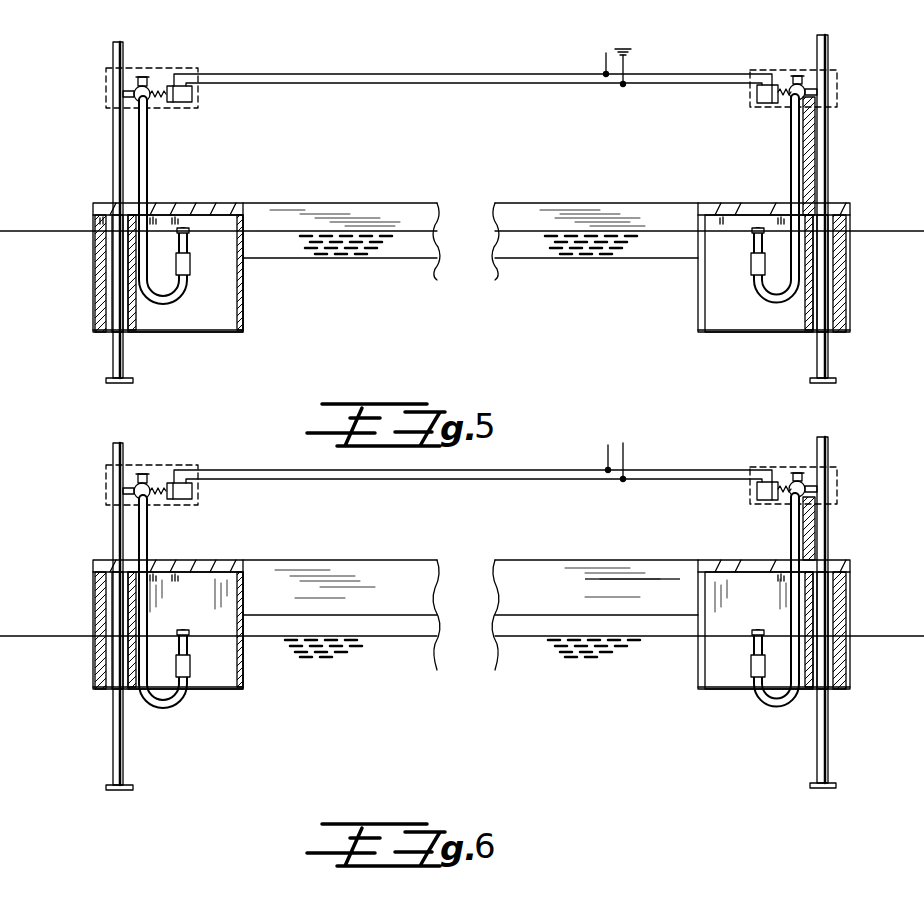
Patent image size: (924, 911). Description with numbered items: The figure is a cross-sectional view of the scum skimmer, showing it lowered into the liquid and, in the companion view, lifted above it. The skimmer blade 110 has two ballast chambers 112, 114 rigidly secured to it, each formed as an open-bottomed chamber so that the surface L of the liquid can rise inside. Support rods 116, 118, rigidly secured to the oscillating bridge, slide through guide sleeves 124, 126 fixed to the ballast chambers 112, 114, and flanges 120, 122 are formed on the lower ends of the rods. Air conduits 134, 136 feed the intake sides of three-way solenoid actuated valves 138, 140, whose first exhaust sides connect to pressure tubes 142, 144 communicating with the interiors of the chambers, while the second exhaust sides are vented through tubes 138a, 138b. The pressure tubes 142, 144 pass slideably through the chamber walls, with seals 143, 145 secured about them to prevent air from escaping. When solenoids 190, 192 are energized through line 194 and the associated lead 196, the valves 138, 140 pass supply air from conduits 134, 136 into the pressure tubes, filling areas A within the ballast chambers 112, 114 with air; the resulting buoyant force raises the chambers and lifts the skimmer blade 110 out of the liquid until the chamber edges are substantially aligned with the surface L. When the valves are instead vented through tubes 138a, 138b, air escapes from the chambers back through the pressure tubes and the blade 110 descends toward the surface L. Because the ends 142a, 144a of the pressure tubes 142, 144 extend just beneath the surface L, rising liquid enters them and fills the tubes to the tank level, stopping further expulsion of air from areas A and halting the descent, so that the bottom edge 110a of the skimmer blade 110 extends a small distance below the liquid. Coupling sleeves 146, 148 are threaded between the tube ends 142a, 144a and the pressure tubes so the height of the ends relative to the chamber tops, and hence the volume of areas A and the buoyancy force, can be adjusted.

In FIG. 5, the skimmer blade 110 is at (410, 218).
In FIG. 6, the skimmer blade 110 is at (528, 583).
In FIG. 5, the bottom edge of skimmer blade 110a is at (385, 259).
In FIG. 6, the bottom edge of skimmer blade 110a is at (535, 615).
In FIG. 5, the ballast chamber 112 is at (243, 295).
In FIG. 6, the ballast chamber 112 is at (204, 629).
In FIG. 5, the ballast chamber 114 is at (703, 296).
In FIG. 6, the ballast chamber 114 is at (740, 631).
In FIG. 5, the support rod 116 is at (113, 141).
In FIG. 6, the support rod 116 is at (113, 527).
In FIG. 5, the support rod 118 is at (828, 146).
In FIG. 6, the support rod 118 is at (828, 452).
In FIG. 5, the flange 120 is at (126, 384).
In FIG. 6, the flange 120 is at (126, 791).
In FIG. 5, the flange 122 is at (830, 384).
In FIG. 6, the flange 122 is at (830, 789).
In FIG. 5, the guide sleeve 124 is at (117, 251).
In FIG. 6, the guide sleeve 124 is at (71, 630).
In FIG. 5, the guide sleeve 126 is at (826, 243).
In FIG. 6, the guide sleeve 126 is at (865, 630).
In FIG. 5, the air conduit 134 is at (133, 91).
In FIG. 6, the air conduit 134 is at (112, 456).
In FIG. 5, the air conduit 136 is at (813, 80).
In FIG. 6, the air conduit 136 is at (848, 472).
In FIG. 5, the three-way solenoid actuated valve 138 is at (150, 83).
In FIG. 6, the three-way solenoid actuated valve 138 is at (162, 462).
In FIG. 5, the vent tube 138a is at (146, 78).
In FIG. 6, the vent tube 138a is at (189, 460).
In FIG. 5, the vent tube 138b is at (791, 83).
In FIG. 6, the vent tube 138b is at (771, 448).
In FIG. 5, the three-way solenoid actuated valve 140 is at (797, 76).
In FIG. 6, the three-way solenoid actuated valve 140 is at (814, 446).
In FIG. 5, the pressure tube 142 is at (147, 138).
In FIG. 6, the pressure tube 142 is at (172, 601).
In FIG. 5, the end of pressure tube 142a is at (190, 240).
In FIG. 6, the end of pressure tube 142a is at (240, 651).
In FIG. 5, the seal 143 is at (176, 203).
In FIG. 6, the seal 143 is at (211, 558).
In FIG. 5, the pressure tube 144 is at (801, 165).
In FIG. 6, the pressure tube 144 is at (825, 600).
In FIG. 5, the end of pressure tube 144a is at (755, 243).
In FIG. 6, the end of pressure tube 144a is at (700, 654).
In FIG. 5, the seal 145 is at (790, 215).
In FIG. 6, the seal 145 is at (764, 593).
In FIG. 5, the coupling sleeve 146 is at (190, 268).
In FIG. 6, the coupling sleeve 146 is at (221, 688).
In FIG. 5, the coupling sleeve 148 is at (754, 268).
In FIG. 6, the coupling sleeve 148 is at (732, 688).
In FIG. 5, the solenoid 190 is at (182, 104).
In FIG. 6, the solenoid 190 is at (200, 497).
In FIG. 5, the solenoid 192 is at (770, 104).
In FIG. 6, the solenoid 192 is at (756, 460).
In FIG. 5, the line 194 is at (432, 74).
In FIG. 6, the line 194 is at (473, 476).
In FIG. 5, the second electrical lead 196 is at (505, 83).
In FIG. 6, the second electrical lead 196 is at (474, 481).
In FIG. 5, the area within ballast chamber A is at (265, 203).
In FIG. 6, the area within ballast chamber A is at (225, 620).
In FIG. 5, the surface of the liquid L is at (527, 226).
In FIG. 6, the surface of the liquid L is at (380, 636).